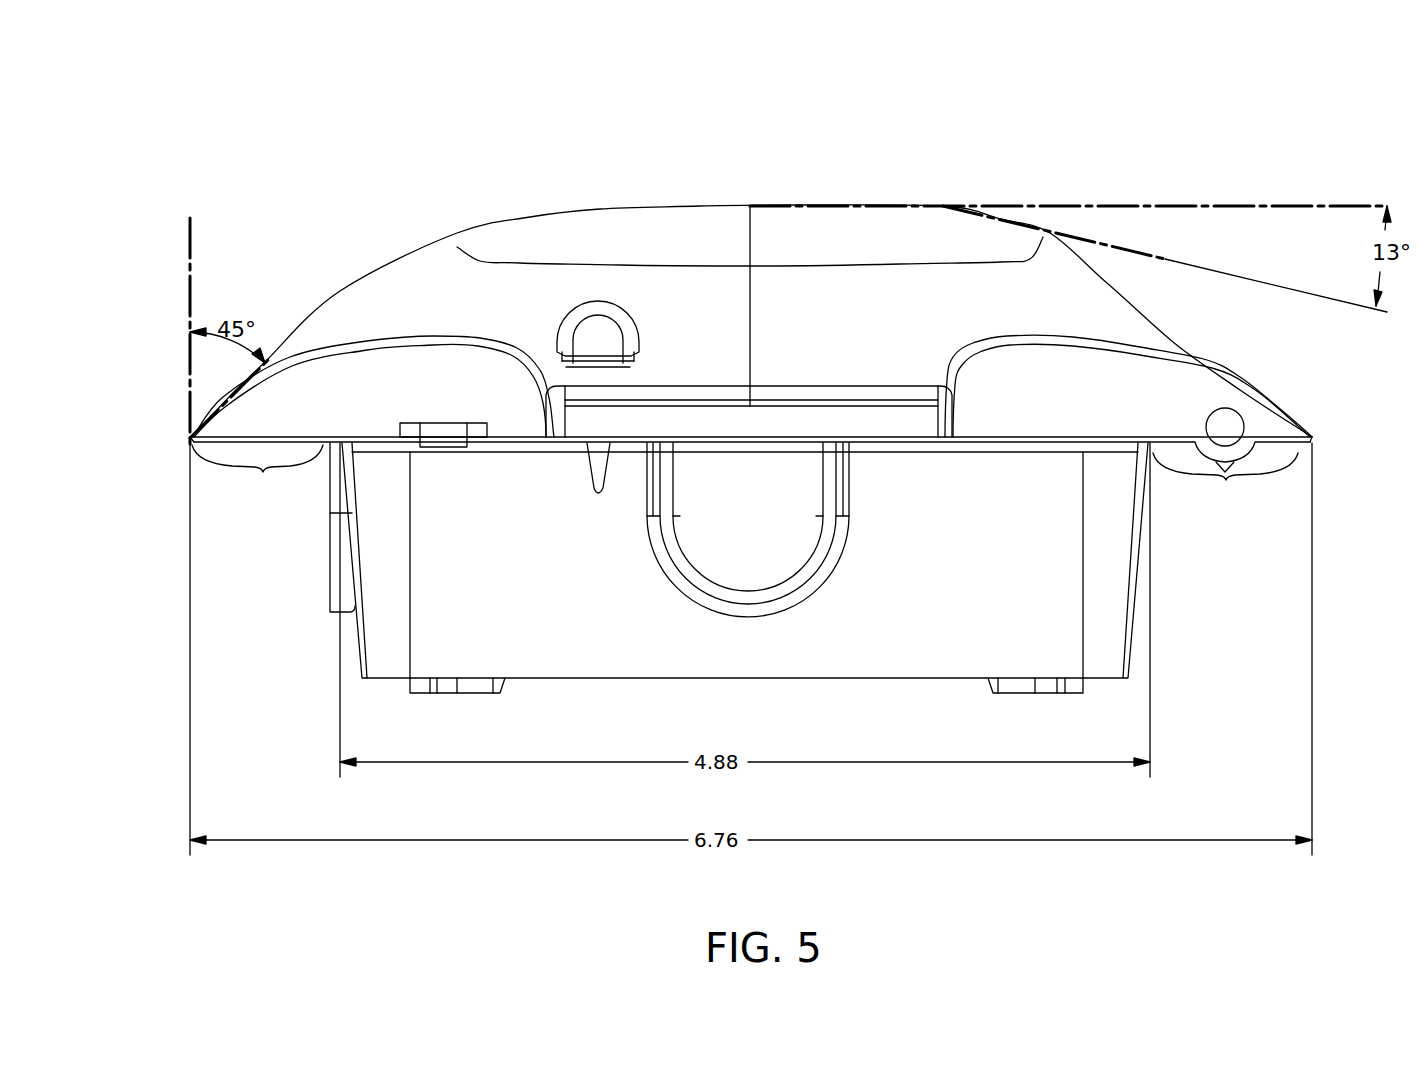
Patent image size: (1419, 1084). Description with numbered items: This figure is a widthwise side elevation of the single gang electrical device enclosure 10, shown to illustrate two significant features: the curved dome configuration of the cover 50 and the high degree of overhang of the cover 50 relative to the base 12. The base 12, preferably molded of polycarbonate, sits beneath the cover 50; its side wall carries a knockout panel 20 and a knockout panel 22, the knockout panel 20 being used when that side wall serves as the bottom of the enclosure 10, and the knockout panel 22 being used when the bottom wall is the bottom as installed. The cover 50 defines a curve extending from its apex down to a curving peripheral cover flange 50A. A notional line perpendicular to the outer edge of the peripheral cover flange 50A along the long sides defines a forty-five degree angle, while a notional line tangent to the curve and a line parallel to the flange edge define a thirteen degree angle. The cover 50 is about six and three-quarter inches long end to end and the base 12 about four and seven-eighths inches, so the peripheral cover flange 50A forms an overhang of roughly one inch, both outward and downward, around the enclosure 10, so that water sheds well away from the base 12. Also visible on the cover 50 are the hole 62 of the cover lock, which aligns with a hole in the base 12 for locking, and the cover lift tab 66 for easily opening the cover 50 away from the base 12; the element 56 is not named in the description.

The single gang electrical device enclosure 10 is at (437, 117).
The base 12 is at (1149, 545).
The knockout panel 20 is at (769, 565).
The knockout panel 22 is at (338, 553).
The cover 50 is at (407, 230).
The peripheral cover flange 50A is at (745, 481).
The fastener 56 is at (1208, 433).
The hole 62 is at (592, 365).
The cover lift tab 66 is at (443, 440).